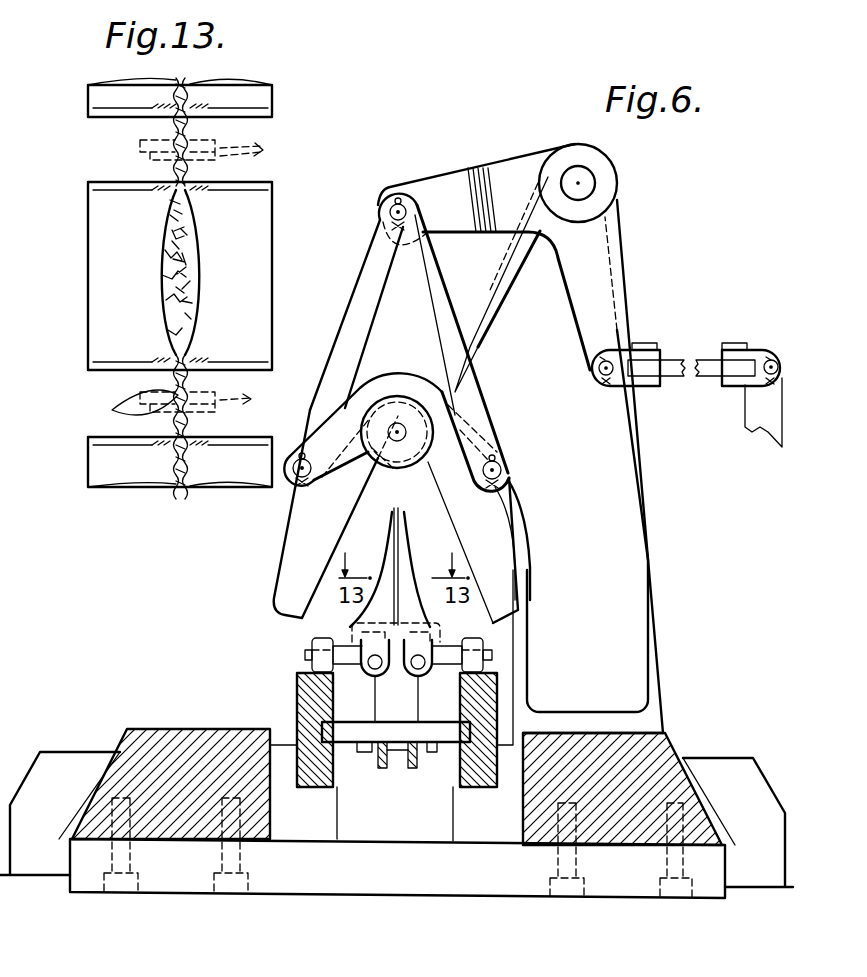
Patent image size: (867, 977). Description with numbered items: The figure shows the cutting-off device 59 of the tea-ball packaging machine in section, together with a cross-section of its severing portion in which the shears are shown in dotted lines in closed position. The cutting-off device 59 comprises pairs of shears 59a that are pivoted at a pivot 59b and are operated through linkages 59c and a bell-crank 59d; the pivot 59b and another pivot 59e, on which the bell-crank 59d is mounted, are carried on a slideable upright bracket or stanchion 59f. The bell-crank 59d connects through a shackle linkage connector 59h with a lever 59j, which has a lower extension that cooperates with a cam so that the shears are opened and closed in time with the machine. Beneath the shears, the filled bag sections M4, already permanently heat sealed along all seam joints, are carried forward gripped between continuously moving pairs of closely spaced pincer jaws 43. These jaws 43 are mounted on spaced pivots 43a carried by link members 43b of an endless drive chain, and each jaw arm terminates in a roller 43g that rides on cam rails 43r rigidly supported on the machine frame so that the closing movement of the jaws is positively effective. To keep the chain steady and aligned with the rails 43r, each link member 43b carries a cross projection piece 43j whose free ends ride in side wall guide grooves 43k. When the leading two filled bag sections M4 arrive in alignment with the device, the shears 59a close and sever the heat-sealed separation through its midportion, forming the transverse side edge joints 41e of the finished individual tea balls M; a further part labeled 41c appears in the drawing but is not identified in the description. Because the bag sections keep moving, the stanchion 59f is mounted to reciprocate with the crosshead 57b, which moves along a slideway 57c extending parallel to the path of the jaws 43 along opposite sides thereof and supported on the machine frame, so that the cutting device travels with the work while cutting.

In FIG. 6, the cutting-off device 59 is at (415, 408).
In FIG. 13, the shears 59a is at (226, 276).
In FIG. 6, the shears 59a is at (478, 550).
In FIG. 6, the pivot 59b is at (406, 428).
In FIG. 6, the linkages 59c is at (423, 293).
In FIG. 6, the bell-crank 59d is at (523, 162).
In FIG. 6, the pivot 59e is at (588, 183).
In FIG. 6, the slideable upright bracket or stanchion 59f is at (615, 543).
In FIG. 6, the shackle linkage connector 59h is at (718, 352).
In FIG. 6, the lever 59j is at (745, 425).
In FIG. 6, the needle / blade 41c is at (402, 552).
In FIG. 13, the transverse side edge joints 41e is at (172, 155).
In FIG. 6, the transverse side edge joints 41e is at (397, 600).
In FIG. 13, the pincer jaws 43 is at (100, 288).
In FIG. 6, the pincer jaws 43 is at (384, 576).
In FIG. 6, the spaced pivots 43a is at (377, 668).
In FIG. 6, the link members 43b is at (418, 668).
In FIG. 6, the roller 43g is at (314, 650).
In FIG. 6, the cam rails 43r is at (297, 690).
In FIG. 6, the side wall guide grooves 43k is at (322, 728).
In FIG. 6, the cross projection piece 43j is at (346, 732).
In FIG. 6, the crosshead 57b is at (405, 896).
In FIG. 6, the slideway 57c is at (92, 797).
In FIG. 13, the individual tea balls M is at (165, 290).
In FIG. 13, the filled bag sections M4 is at (190, 96).